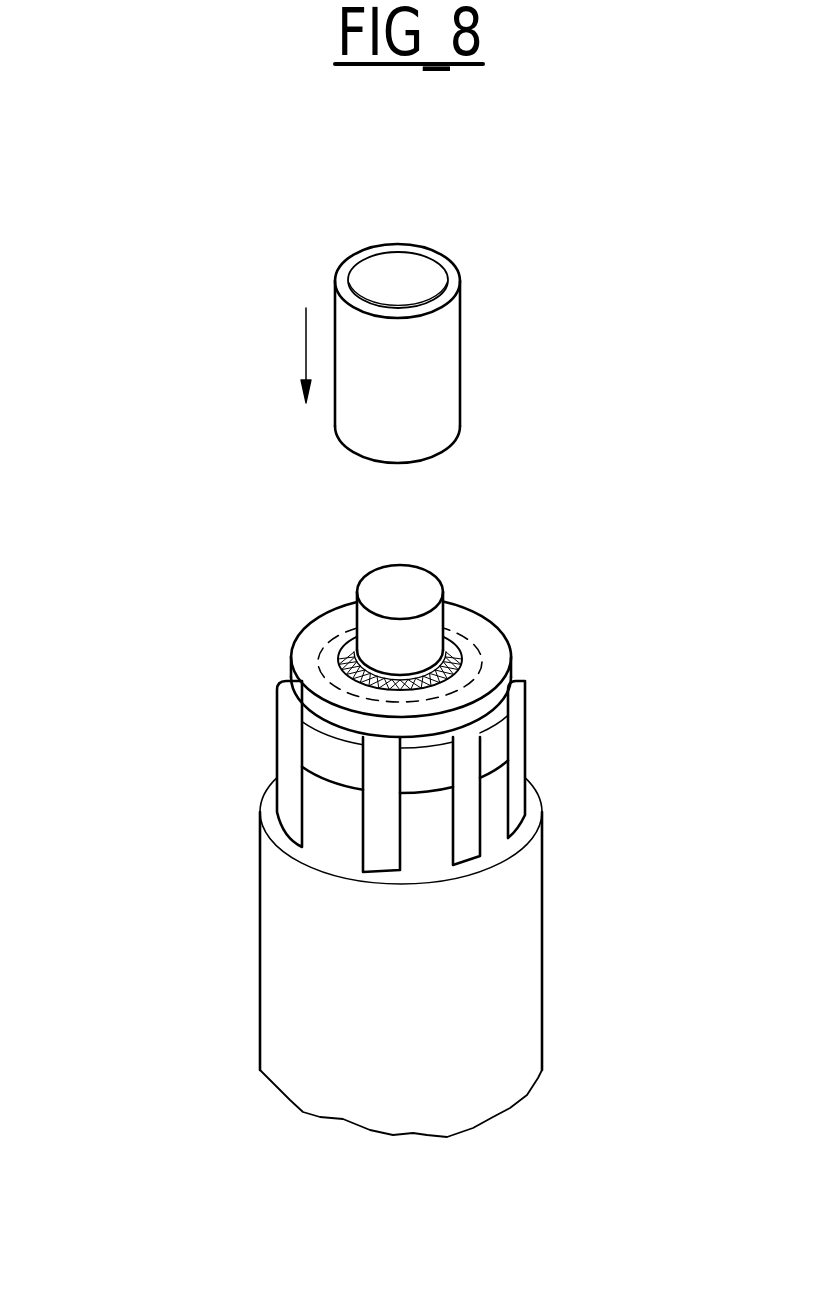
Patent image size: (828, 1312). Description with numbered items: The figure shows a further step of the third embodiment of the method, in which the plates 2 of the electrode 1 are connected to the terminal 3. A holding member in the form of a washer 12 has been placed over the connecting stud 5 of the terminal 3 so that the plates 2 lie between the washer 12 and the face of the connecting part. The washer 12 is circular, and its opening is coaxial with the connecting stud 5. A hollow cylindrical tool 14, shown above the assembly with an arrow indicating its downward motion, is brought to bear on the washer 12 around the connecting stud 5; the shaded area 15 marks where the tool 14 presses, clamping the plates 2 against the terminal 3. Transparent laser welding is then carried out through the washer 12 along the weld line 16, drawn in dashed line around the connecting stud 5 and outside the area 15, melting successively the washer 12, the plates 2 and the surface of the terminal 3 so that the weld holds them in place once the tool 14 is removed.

The electrode 1 is at (505, 953).
The plates 2 is at (518, 708).
The terminal 3 is at (323, 750).
The connecting stud 5 is at (381, 591).
The washer 12 is at (301, 649).
The hollow cylindrical tool 14 is at (440, 366).
The area 15 is at (456, 638).
The weld line 16 is at (487, 637).